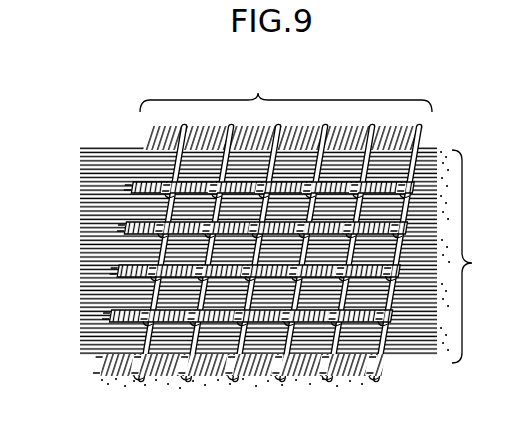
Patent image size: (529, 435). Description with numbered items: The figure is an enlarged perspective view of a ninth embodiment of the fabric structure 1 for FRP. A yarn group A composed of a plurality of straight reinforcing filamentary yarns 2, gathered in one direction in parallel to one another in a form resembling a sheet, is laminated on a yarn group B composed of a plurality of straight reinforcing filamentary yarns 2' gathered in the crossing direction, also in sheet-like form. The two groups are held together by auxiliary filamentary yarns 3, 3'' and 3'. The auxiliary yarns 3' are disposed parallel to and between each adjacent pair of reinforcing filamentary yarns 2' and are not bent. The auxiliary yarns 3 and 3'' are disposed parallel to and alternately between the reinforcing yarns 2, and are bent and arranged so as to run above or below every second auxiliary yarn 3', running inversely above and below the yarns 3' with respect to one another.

The structure 1 is at (252, 251).
The reinforcing filamentary yarns 2 is at (278, 238).
The reinforcing filamentary yarns 2' is at (305, 121).
The auxiliary filamentary yarns 3 is at (217, 235).
The auxiliary filamentary yarns 3' is at (280, 276).
The auxiliary filamentary yarns 3'' is at (220, 232).
The yarn group A is at (473, 256).
The yarn group B is at (286, 92).